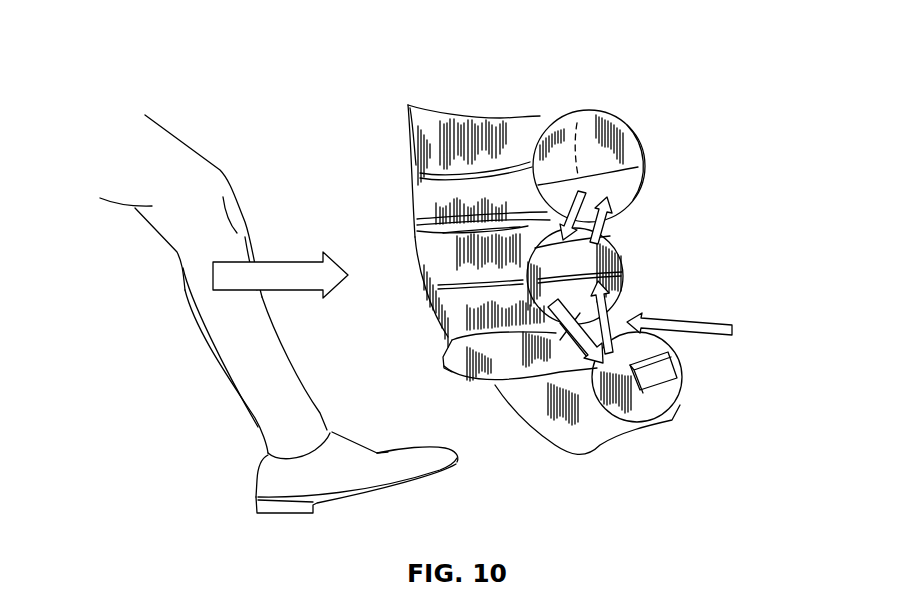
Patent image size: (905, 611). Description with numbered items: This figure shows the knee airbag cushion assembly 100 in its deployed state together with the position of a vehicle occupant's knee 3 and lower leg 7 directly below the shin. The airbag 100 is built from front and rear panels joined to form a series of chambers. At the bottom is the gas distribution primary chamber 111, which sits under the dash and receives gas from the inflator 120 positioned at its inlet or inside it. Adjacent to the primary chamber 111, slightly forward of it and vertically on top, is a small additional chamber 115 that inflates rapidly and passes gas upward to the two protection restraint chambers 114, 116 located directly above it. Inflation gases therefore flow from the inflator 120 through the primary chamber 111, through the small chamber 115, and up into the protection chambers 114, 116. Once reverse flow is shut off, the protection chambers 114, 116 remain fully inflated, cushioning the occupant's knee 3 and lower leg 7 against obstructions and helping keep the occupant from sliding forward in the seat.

The knee 3 is at (197, 198).
The lower leg 7 is at (280, 368).
The knee airbag cushion assembly 100 is at (561, 273).
The additional protection restraint chamber 116 is at (433, 133).
The lower additional protection chamber 114 is at (432, 262).
The small additional chamber 115 is at (468, 377).
The gas distribution primary chamber 111 is at (607, 423).
The inflator 120 is at (663, 373).